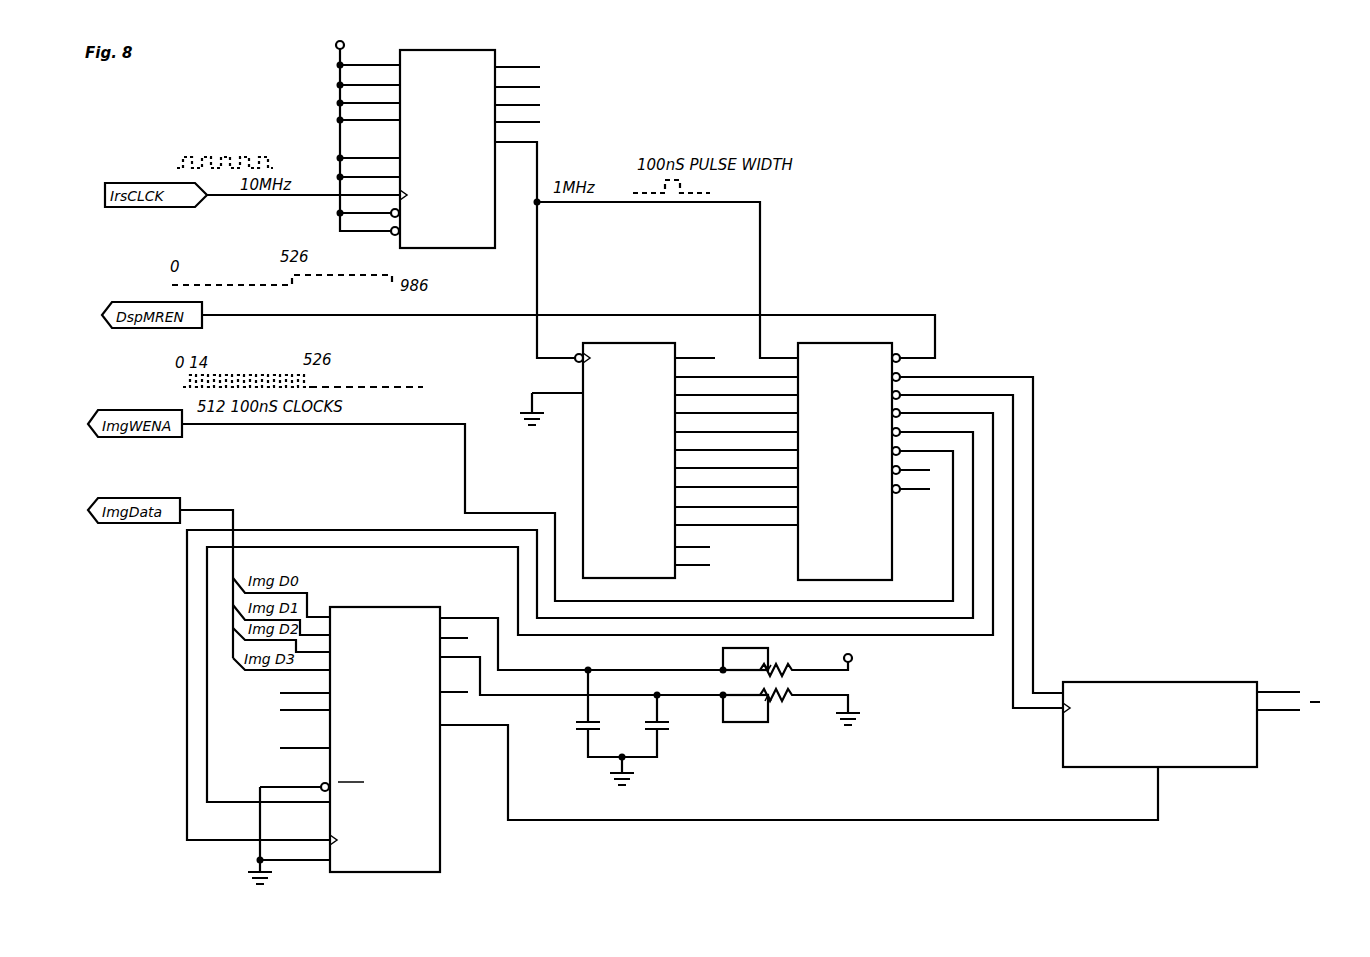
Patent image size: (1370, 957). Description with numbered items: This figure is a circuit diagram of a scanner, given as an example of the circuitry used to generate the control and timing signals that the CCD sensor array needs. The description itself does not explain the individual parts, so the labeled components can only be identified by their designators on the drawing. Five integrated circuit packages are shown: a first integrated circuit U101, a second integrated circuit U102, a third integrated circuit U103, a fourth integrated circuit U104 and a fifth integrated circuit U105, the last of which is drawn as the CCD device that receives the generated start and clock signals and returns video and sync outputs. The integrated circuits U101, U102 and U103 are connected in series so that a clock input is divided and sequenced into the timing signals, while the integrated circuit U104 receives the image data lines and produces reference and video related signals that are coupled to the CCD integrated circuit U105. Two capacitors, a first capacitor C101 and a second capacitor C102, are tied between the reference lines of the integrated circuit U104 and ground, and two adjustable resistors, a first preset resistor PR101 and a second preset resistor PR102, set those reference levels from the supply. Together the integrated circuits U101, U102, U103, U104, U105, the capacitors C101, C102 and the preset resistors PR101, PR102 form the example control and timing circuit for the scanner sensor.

The 74HC160 counter U101 is at (549, 193).
The 74HC4040 counter U102 is at (659, 464).
The 16L8 sequencer PAL U103 is at (625, 582).
The CA3306 A/D converter U104 is at (703, 740).
The CCD (Reticon evaluation board equivalent) U105 is at (1184, 717).
The capacitor 100n C101 is at (606, 712).
The capacitor 100n C102 is at (664, 725).
The potentiometer 5k PR101 is at (805, 662).
The potentiometer 5k PR102 is at (790, 708).